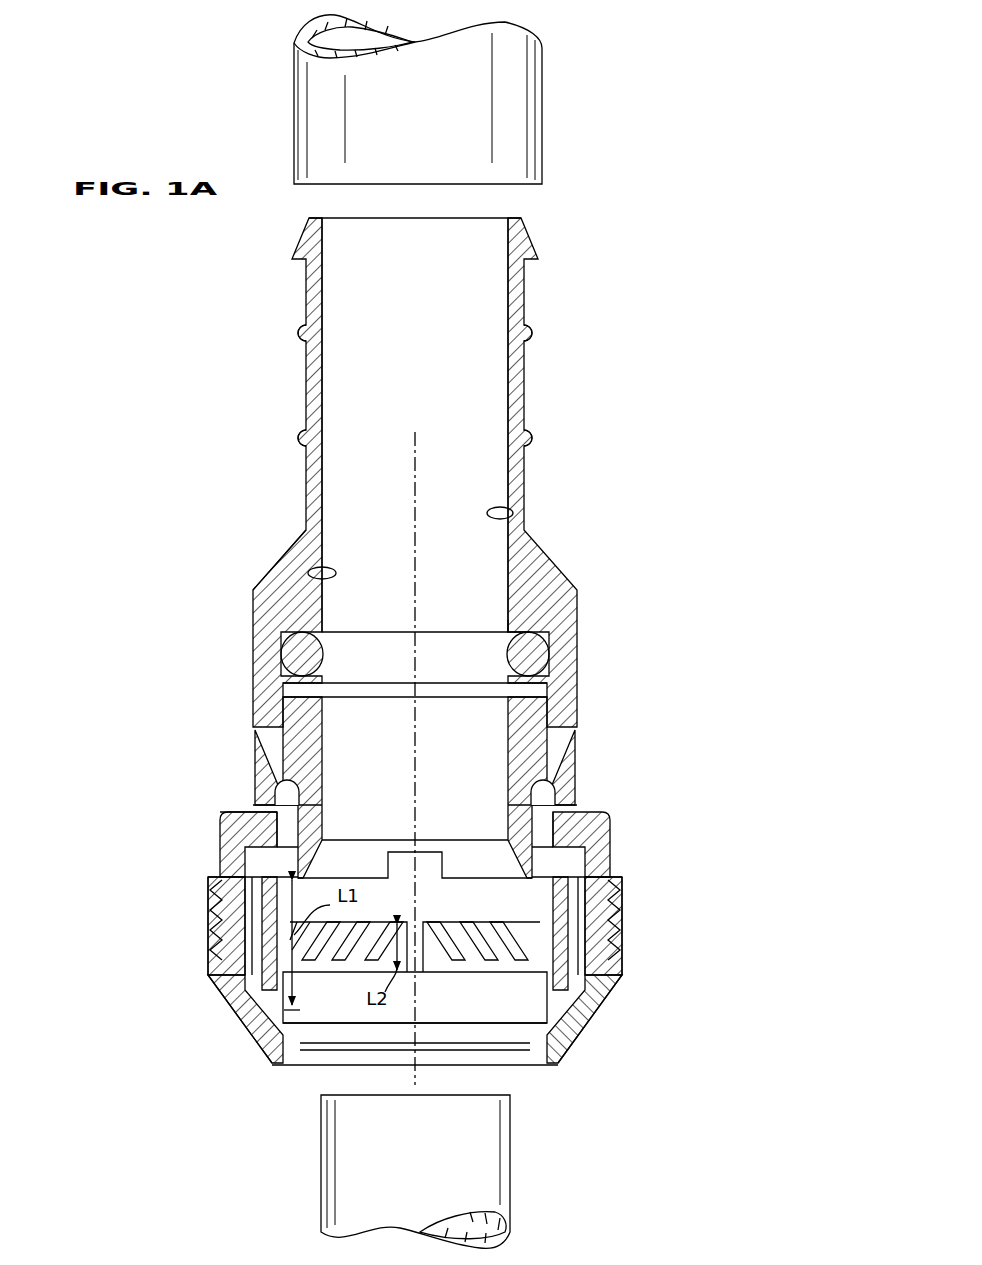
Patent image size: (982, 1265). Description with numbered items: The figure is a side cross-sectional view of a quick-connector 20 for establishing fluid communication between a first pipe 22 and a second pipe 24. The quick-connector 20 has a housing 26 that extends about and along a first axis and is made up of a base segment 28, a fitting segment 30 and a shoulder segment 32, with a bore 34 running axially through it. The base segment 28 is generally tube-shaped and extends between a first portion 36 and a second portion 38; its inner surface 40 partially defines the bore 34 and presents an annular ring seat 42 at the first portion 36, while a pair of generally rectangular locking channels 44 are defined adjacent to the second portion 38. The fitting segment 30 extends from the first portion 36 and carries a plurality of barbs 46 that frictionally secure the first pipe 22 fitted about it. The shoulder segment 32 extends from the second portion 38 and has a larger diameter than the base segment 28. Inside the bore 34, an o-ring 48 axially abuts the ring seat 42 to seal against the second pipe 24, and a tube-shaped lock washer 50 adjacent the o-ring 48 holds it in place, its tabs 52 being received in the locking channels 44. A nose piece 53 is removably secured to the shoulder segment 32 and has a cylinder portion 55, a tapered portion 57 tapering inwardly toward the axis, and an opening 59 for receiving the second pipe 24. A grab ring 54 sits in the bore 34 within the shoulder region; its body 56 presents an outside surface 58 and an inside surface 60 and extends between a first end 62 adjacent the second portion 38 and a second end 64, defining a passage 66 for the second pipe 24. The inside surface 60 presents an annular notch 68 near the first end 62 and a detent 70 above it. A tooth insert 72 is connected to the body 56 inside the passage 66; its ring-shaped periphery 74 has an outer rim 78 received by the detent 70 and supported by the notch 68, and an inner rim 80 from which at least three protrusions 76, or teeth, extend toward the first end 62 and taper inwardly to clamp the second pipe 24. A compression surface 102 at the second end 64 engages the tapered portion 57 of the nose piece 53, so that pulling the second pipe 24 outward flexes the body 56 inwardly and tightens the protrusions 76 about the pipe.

The quick-connector 20 is at (720, 612).
The first pipe 22 is at (512, 110).
The second pipe 24 is at (485, 1145).
The housing 26 is at (588, 690).
The base segment 28 is at (578, 578).
The fitting segment 30 is at (304, 410).
The shoulder segment 32 is at (612, 840).
The bore 34 is at (512, 513).
The first portion 36 is at (298, 560).
The second portion 38 is at (258, 820).
The inner surface 40 is at (310, 573).
The ring seat 42 is at (503, 622).
The locking channels 44 is at (266, 737).
The barbs 46 is at (532, 438).
The o-ring 48 is at (542, 650).
The lock washer 50 is at (508, 737).
The tabs 52 is at (262, 800).
The nose piece 53 is at (264, 1064).
The grab ring 54 is at (580, 905).
The cylinder portion 55 is at (607, 972).
The body 56 is at (600, 928).
The tapered portion 57 is at (220, 950).
The outside surface 58 is at (260, 907).
The opening 59 is at (292, 1054).
The inside surface 60 is at (222, 912).
The first end 62 is at (272, 845).
The second end 64 is at (265, 1043).
The passage 66 is at (590, 892).
The notch 68 is at (292, 975).
The detent 70 is at (225, 985).
The tooth insert 72 is at (506, 980).
The periphery 74 is at (565, 1052).
The protrusions 76 is at (440, 935).
The outer rim 78 is at (568, 955).
The inner rim 80 is at (535, 978).
The compression surface 102 is at (256, 1008).